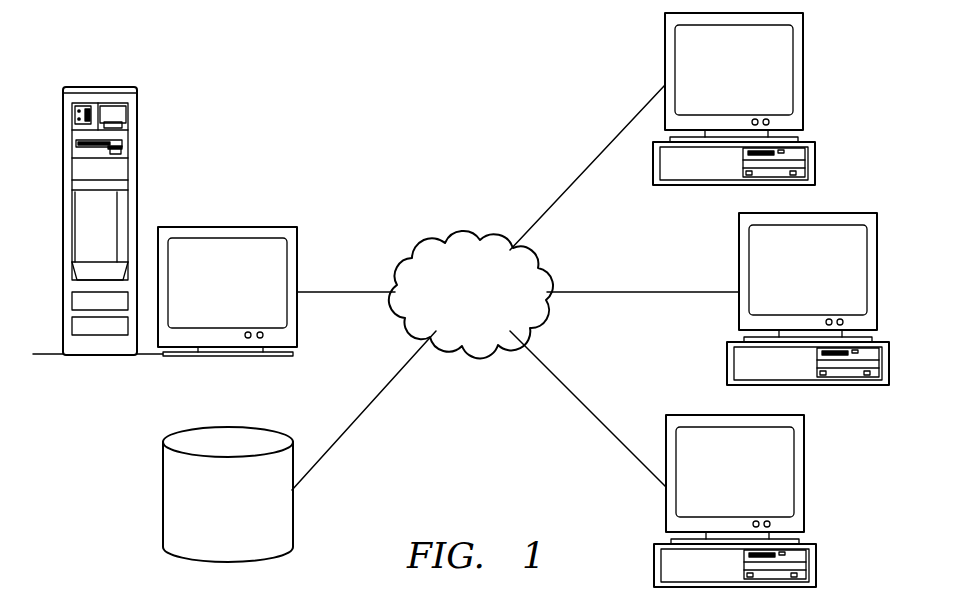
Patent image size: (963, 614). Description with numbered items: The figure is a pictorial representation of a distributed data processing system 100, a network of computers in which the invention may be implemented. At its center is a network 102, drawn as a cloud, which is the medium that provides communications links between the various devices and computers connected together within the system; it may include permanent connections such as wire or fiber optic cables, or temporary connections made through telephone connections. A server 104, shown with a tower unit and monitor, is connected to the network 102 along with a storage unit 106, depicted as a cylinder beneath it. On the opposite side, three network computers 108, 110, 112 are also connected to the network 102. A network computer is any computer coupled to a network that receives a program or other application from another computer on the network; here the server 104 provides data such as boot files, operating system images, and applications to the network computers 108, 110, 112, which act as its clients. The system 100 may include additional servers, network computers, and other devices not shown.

The distributed data processing system 100 is at (360, 48).
The network 102 is at (450, 303).
The server 104 is at (208, 292).
The storage unit 106 is at (208, 516).
The network computer 108 is at (715, 82).
The network computer 110 is at (808, 299).
The network computer 112 is at (735, 501).